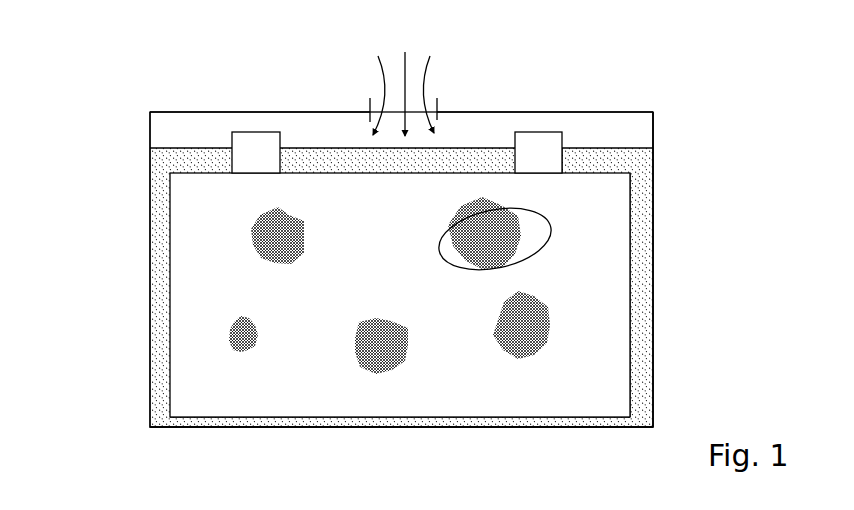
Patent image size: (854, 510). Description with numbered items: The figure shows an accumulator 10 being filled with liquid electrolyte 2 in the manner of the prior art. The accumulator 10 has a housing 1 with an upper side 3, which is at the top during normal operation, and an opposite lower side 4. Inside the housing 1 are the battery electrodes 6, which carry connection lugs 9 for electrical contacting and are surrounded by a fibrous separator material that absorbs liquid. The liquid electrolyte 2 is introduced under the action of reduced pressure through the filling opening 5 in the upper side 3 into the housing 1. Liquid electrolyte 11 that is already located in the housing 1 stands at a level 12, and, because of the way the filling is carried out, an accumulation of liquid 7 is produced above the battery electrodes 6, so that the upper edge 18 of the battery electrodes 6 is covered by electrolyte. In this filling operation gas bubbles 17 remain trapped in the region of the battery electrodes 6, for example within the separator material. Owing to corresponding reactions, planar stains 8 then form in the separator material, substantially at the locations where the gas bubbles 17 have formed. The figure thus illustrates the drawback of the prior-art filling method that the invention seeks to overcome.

The accumulator 10 is at (96, 107).
The housing 1 is at (152, 320).
The liquid electrolyte 2 is at (388, 82).
The upper side 3 is at (210, 112).
The lower side 4 is at (232, 428).
The filling opening 5 is at (430, 92).
The battery electrodes 6 is at (315, 395).
The accumulation of liquid 7 is at (602, 162).
The planar stains 8 is at (287, 207).
The connection lugs 9 is at (257, 141).
The liquid electrolyte 11 is at (643, 247).
The level 12 is at (640, 148).
The gas bubbles 17 is at (440, 242).
The upper edge 18 is at (582, 173).